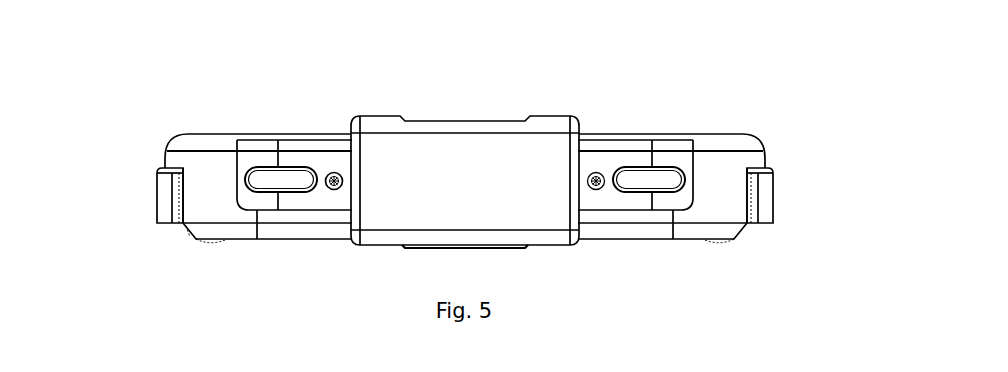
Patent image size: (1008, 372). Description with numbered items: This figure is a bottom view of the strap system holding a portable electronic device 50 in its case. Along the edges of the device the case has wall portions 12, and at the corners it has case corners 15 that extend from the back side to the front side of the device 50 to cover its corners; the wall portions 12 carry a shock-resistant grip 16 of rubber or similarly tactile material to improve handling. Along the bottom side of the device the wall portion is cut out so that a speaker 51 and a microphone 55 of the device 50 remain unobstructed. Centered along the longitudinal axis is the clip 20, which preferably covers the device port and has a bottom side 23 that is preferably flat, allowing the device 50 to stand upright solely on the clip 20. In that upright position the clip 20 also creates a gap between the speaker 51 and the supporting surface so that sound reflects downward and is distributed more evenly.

The clip 20 is at (470, 96).
The wall portion 12 is at (278, 220).
The case corner 15 is at (192, 190).
The shock-resistant grip 16 is at (167, 192).
The portable electronic device 50 is at (328, 157).
The microphone 55 is at (268, 178).
The speaker 51 is at (625, 178).
The bottom side 23 is at (518, 192).